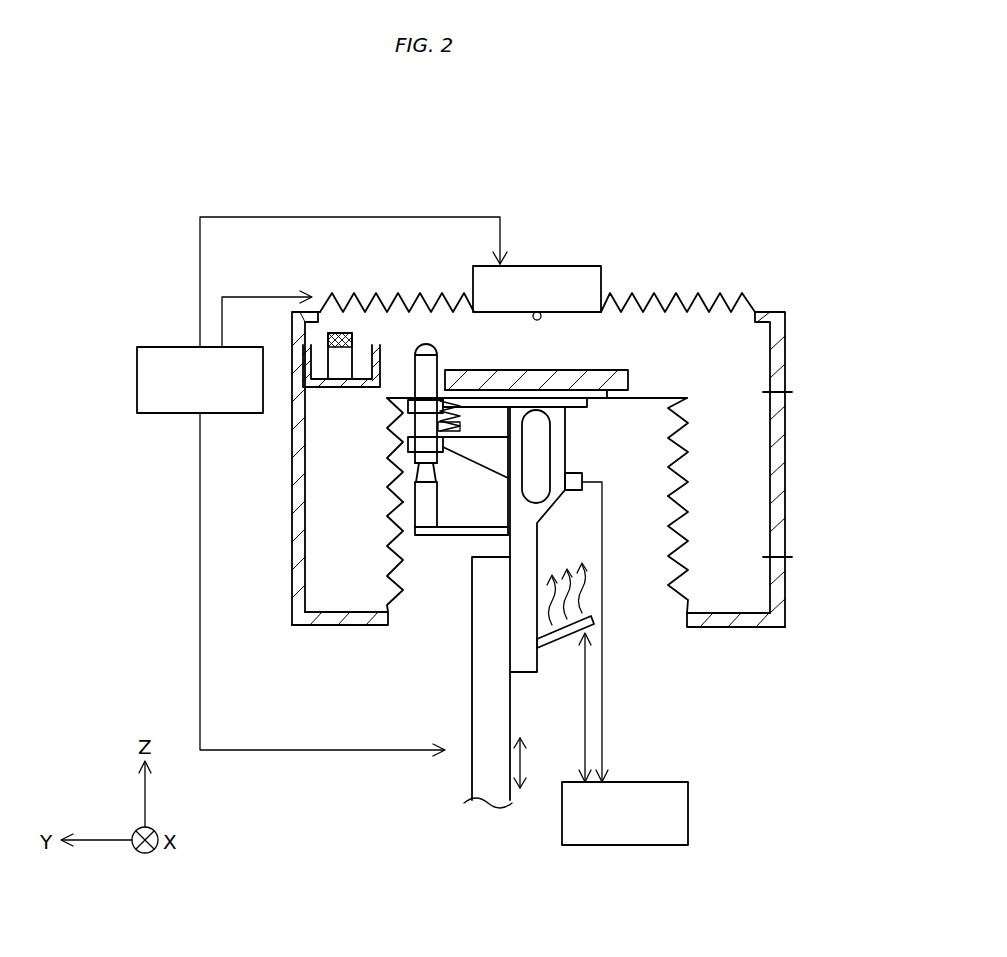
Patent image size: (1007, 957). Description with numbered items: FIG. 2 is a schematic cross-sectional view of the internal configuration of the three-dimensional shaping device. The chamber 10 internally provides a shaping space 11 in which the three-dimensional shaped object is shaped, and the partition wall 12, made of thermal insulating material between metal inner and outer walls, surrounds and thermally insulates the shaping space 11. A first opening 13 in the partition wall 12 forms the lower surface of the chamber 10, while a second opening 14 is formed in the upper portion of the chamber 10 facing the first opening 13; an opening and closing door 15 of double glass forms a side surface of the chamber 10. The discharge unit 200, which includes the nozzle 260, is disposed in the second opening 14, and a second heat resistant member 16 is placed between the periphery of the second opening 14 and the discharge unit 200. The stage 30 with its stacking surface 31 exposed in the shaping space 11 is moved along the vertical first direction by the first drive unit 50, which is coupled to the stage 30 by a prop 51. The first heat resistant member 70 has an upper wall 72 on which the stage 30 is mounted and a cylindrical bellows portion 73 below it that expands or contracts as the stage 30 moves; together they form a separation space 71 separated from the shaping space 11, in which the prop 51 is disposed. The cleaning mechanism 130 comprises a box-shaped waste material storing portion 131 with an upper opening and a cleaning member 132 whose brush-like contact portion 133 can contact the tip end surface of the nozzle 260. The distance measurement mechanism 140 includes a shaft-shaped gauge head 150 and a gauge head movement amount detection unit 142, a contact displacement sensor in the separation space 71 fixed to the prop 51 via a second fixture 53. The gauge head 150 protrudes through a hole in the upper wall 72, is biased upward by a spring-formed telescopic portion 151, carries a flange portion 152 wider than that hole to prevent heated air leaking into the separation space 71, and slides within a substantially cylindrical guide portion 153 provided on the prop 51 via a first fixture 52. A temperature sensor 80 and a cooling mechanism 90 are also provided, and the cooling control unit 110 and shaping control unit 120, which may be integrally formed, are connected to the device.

The chamber 10 is at (772, 273).
The shaping space 11 is at (740, 488).
The partition wall 12 is at (295, 528).
The first opening 13 is at (393, 625).
The second opening 14 is at (330, 297).
The opening and closing door 15 is at (784, 512).
The second heat resistant member 16 is at (678, 298).
The stage 30 is at (629, 378).
The stacking surface 31 is at (596, 370).
The first drive unit 50 is at (472, 712).
The prop 51 is at (508, 503).
The first fixture 52 is at (460, 447).
The second fixture 53 is at (440, 537).
The first heat resistant member 70 is at (726, 386).
The separation space 71 is at (600, 458).
The upper wall 72 is at (666, 400).
The bellows portion 73 is at (681, 470).
The temperature sensor 80 is at (575, 491).
The cooling mechanism 90 is at (548, 652).
The cooling control unit 110 is at (660, 782).
The shaping control unit 120 is at (158, 347).
The cleaning mechanism 130 is at (423, 176).
The waste material storing portion 131 is at (376, 345).
The cleaning member 132 is at (357, 350).
The contact portion 133 is at (338, 333).
The distance measurement mechanism 140 is at (402, 385).
The gauge head movement amount detection unit 142 is at (397, 505).
The gauge head 150 is at (443, 398).
The telescopic portion 151 is at (485, 399).
The flange portion 152 is at (448, 400).
The guide portion 153 is at (415, 443).
The discharge unit 200 is at (574, 266).
The nozzle 260 is at (541, 318).